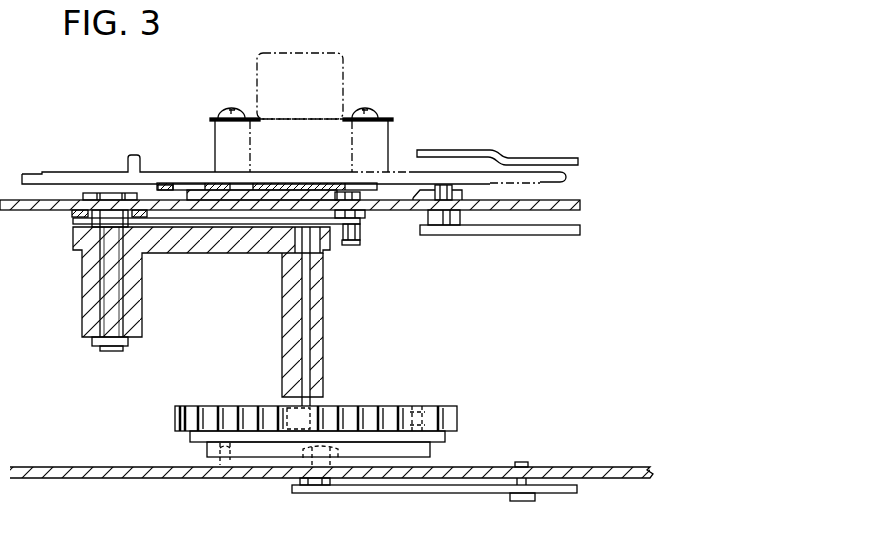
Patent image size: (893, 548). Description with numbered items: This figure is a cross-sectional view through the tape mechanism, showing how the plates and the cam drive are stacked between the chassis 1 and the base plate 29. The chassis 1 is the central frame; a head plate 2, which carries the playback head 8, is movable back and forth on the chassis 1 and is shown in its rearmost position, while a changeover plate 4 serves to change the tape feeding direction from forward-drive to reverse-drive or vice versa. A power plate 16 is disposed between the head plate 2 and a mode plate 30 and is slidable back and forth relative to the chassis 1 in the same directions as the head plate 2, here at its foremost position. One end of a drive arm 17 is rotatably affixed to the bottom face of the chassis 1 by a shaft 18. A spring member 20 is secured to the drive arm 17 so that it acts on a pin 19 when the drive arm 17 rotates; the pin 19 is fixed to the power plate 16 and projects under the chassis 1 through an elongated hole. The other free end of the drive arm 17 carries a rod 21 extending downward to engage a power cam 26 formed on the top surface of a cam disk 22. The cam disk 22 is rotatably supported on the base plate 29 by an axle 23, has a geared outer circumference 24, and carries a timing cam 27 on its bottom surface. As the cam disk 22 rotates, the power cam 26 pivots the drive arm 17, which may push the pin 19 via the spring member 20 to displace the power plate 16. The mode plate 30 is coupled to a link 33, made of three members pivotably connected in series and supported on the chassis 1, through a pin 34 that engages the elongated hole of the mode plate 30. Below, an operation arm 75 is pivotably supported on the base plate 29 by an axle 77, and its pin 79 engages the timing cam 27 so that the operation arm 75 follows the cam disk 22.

The chassis 1 is at (560, 205).
The head plate 2 is at (157, 172).
The changeover plate 4 is at (490, 150).
The playback head 8 is at (343, 82).
The power plate 16 is at (288, 187).
The drive arm 17 is at (210, 243).
The shaft 18 is at (108, 287).
The pin 19 is at (352, 246).
The spring member 20 is at (362, 222).
The rod 21 is at (305, 335).
The cam disk 22 is at (312, 444).
The axle 23 is at (292, 457).
The geared outer circumference 24 is at (175, 415).
The power cam 26 is at (418, 408).
The timing cam 27 is at (226, 457).
The base plate 29 is at (570, 470).
The mode plate 30 is at (200, 190).
The link 33 is at (522, 271).
The pin 34 is at (441, 185).
The operation arm 75 is at (425, 493).
The axle 77 is at (522, 501).
The pin 79 is at (336, 450).